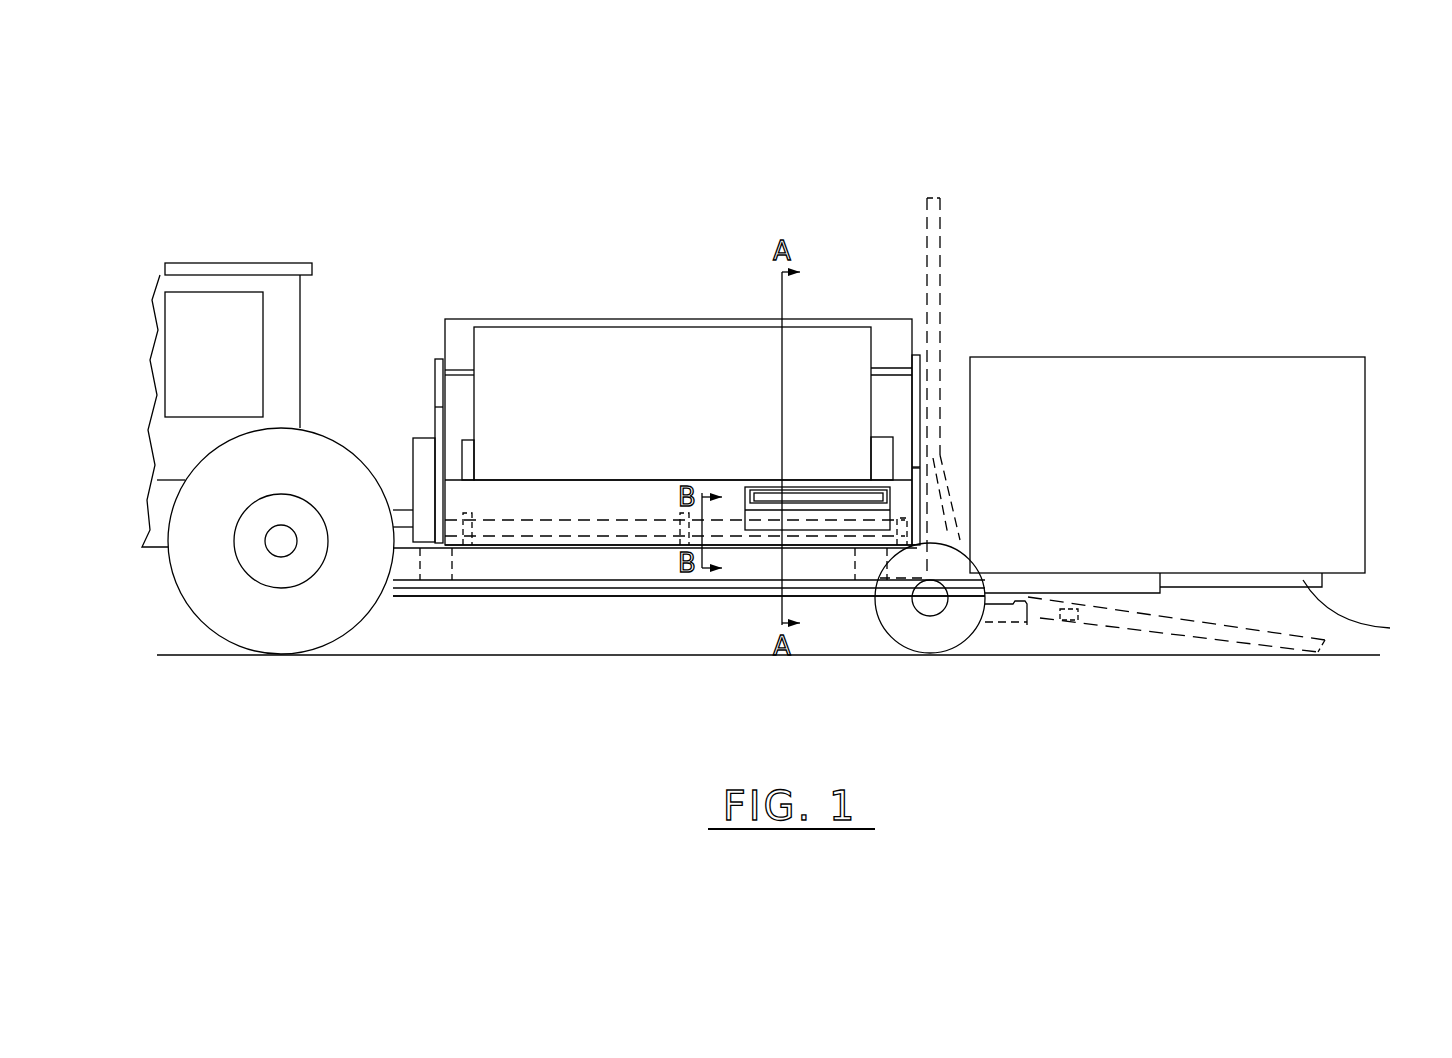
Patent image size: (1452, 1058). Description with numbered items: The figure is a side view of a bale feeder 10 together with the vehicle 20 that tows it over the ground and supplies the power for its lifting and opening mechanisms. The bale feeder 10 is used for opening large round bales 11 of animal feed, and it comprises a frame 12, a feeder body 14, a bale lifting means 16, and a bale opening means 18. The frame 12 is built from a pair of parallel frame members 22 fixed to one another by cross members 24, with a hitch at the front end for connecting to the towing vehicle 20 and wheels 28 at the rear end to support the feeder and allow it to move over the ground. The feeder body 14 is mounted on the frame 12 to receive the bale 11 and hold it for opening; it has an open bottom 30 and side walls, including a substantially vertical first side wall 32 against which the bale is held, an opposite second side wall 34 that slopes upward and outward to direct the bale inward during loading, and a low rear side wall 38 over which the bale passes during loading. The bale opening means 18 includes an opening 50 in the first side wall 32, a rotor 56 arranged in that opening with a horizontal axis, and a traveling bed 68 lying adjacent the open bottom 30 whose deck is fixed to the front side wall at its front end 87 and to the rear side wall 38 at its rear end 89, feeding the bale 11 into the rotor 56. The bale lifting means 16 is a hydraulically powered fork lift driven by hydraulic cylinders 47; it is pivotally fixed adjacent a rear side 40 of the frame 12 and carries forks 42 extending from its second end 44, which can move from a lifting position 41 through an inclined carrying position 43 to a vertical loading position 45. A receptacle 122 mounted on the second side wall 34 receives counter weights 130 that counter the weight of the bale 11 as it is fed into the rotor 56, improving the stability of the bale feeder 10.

The bale feeder 10 is at (622, 225).
The bale 11 is at (808, 342).
The frame 12 is at (730, 592).
The feeder body 14 is at (452, 303).
The bale lifting means 16 is at (1145, 599).
The bale opening means 18 is at (466, 430).
The vehicle 20 is at (302, 268).
The frame members 22 is at (655, 567).
The cross members 24 is at (432, 570).
The wheels 28 is at (937, 640).
The open bottom 30 is at (575, 550).
The first side wall 32 is at (483, 325).
The second side wall 34 is at (590, 510).
The rear side wall 38 is at (917, 373).
The rear side 40 is at (920, 580).
The lifting position 41 is at (1290, 650).
The forks 42 is at (1392, 628).
The inclined carrying position 43 is at (1240, 578).
The second end 44 is at (1140, 585).
The vertical loading position 45 is at (950, 222).
The hydraulic cylinders 47 is at (1030, 622).
The opening 50 is at (458, 385).
The rotor 56 is at (438, 398).
The traveling bed 68 is at (543, 520).
The front end 87 is at (465, 512).
The rear end 89 is at (900, 520).
The receptacle 122 is at (760, 508).
The counter weights 130 is at (808, 497).